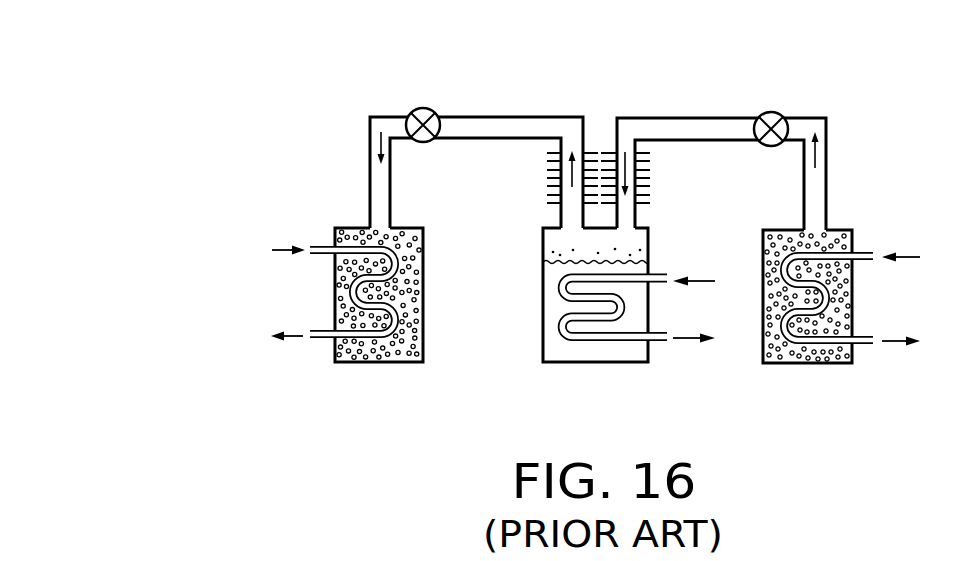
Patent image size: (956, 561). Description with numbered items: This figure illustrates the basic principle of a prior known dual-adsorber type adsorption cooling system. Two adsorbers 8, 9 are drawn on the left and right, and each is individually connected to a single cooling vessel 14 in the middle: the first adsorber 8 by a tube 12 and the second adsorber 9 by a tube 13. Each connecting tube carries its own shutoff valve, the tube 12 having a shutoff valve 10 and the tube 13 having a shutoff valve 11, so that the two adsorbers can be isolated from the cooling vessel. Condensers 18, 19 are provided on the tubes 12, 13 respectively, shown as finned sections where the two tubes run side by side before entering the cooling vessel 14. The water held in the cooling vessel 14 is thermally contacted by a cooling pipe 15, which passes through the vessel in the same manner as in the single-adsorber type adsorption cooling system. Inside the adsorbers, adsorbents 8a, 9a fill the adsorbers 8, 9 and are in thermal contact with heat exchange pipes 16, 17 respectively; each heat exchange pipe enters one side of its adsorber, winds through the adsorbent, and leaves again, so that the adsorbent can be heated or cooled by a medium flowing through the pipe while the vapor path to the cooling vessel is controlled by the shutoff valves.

The adsorber 8 is at (362, 363).
The adsorbent 8a is at (346, 226).
The adsorber 9 is at (808, 365).
The adsorbent 9a is at (836, 229).
The shutoff valve 10 is at (429, 109).
The shutoff valve 11 is at (786, 114).
The tube 12 is at (536, 116).
The tube 13 is at (690, 118).
The cooling vessel 14 is at (565, 364).
The cooling pipe 15 is at (655, 346).
The heat exchange pipe 16 is at (322, 255).
The heat exchange pipe 17 is at (866, 262).
The condenser 18 is at (548, 200).
The condenser 19 is at (652, 202).